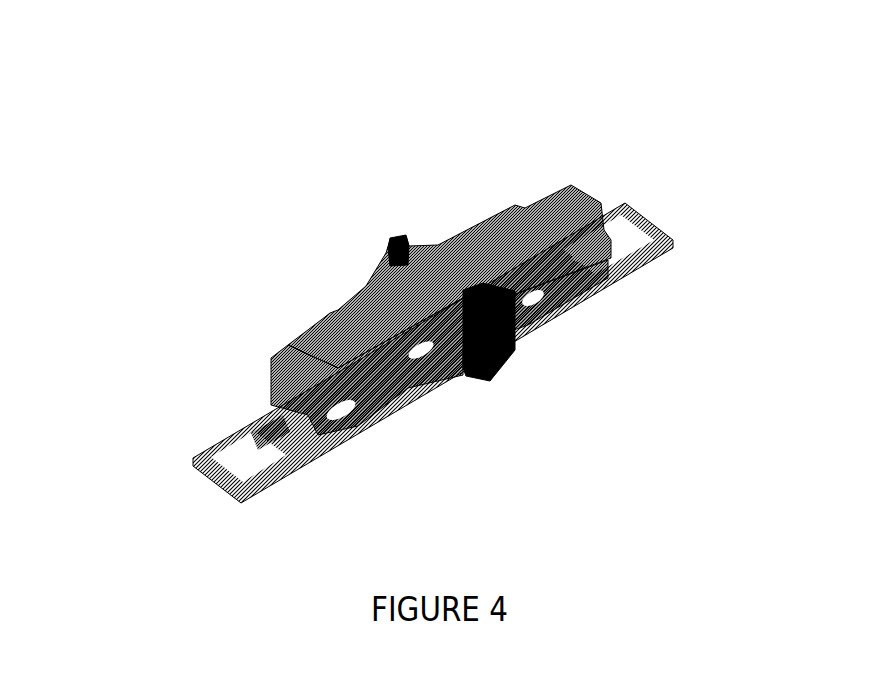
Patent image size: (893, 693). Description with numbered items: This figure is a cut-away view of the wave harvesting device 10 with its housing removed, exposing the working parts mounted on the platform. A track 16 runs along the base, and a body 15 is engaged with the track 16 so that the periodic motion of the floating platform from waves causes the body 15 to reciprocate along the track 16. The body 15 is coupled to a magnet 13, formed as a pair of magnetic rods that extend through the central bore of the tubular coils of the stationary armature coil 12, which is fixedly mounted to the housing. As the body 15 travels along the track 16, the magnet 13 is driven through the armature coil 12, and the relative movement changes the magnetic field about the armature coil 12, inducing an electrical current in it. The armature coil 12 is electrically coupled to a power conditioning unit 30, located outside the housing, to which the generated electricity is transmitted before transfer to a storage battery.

The wave harvesting device 10 is at (423, 291).
The armature coil 12 is at (388, 230).
The magnet 13 is at (353, 285).
The body 15 is at (280, 337).
The track 16 is at (210, 477).
The power conditioning unit 30 is at (507, 342).